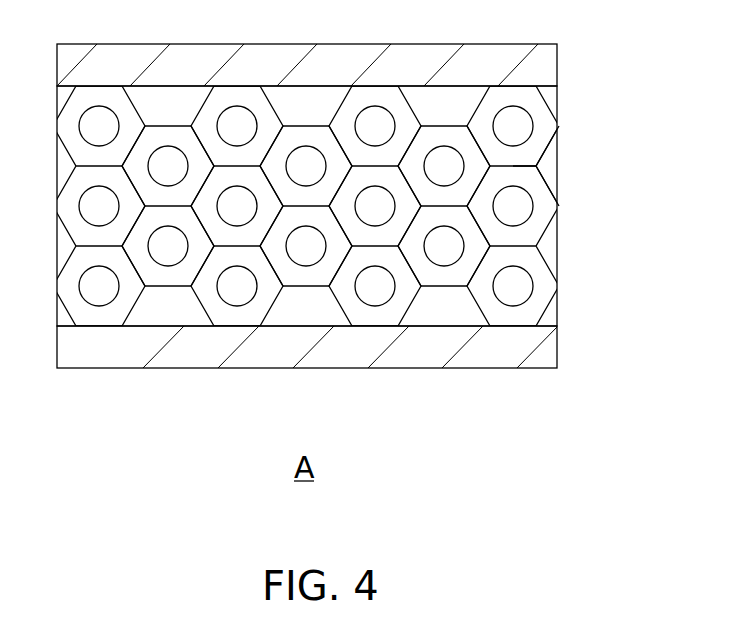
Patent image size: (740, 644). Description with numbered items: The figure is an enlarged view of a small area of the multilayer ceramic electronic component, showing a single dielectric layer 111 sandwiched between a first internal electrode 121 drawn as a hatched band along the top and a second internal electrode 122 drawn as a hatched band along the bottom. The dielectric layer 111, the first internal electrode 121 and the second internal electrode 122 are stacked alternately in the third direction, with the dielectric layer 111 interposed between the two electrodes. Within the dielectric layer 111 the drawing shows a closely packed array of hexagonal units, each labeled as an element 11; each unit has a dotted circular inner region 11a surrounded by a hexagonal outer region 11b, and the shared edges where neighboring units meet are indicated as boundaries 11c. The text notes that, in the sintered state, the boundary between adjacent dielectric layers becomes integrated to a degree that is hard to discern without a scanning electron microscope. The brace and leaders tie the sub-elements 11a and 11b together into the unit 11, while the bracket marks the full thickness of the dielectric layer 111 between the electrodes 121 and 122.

The optical fiber 11 is at (343, 274).
The core 11a is at (377, 298).
The cladding (hexagonal) 11b is at (415, 300).
The boundary between adjacent fibers 11c is at (573, 166).
The dielectric layer 111 is at (343, 274).
The first internal electrode 121 is at (557, 66).
The second internal electrode 122 is at (557, 347).